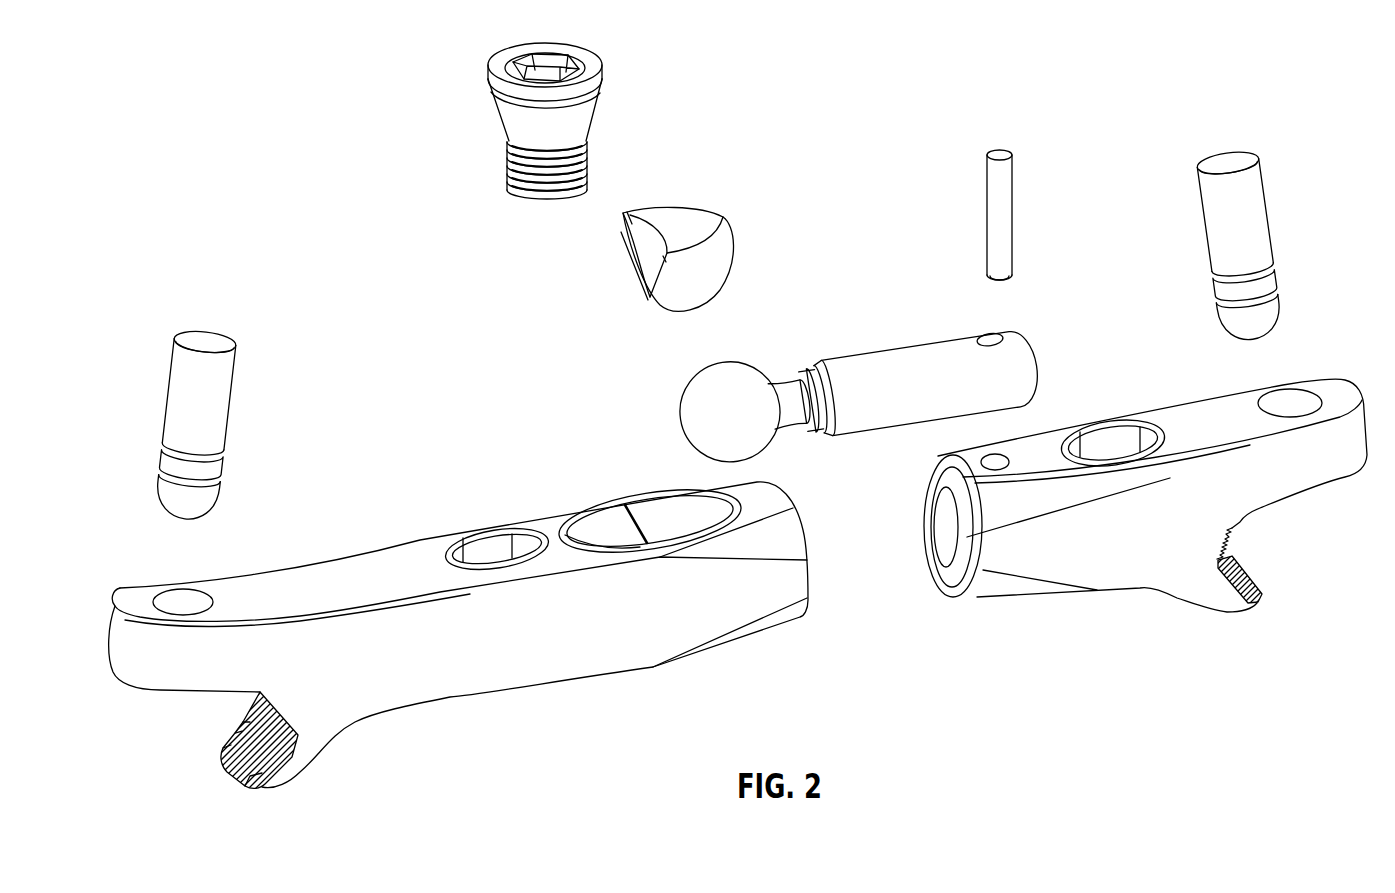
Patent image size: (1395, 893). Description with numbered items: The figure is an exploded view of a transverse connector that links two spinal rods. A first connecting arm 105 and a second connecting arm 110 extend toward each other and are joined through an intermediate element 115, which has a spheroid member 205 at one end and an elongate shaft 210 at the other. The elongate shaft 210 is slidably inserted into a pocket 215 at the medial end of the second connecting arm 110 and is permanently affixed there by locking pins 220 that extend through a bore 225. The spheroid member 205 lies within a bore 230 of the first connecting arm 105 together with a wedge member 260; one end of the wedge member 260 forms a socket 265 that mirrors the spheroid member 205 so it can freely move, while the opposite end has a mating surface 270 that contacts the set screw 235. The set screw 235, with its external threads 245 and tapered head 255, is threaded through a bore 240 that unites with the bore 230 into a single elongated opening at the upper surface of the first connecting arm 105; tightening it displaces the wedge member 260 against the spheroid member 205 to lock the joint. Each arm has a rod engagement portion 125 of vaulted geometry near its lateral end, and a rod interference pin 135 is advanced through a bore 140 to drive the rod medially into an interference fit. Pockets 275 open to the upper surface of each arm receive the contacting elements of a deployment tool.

The first connecting arm 105 is at (721, 563).
The second connecting arm 110 is at (1112, 513).
The intermediate element 115 is at (824, 387).
The rod engagement portion 125 is at (220, 723).
The rod interference pin 135 is at (1258, 200).
The bore 140 is at (178, 605).
The spheroid member 205 is at (692, 400).
The elongate shaft 210 is at (893, 412).
The pocket 215 is at (945, 535).
The locking pin 220 is at (1003, 178).
The bore 225 is at (1001, 458).
The bore 230 is at (666, 524).
The set screw 235 is at (535, 149).
The bore 240 is at (593, 528).
The external threads 245 is at (546, 188).
The tapered head 255 is at (605, 110).
The wedge member 260 is at (688, 225).
The socket 265 is at (740, 279).
The mating surface 270 is at (630, 265).
The pocket 275 is at (493, 557).